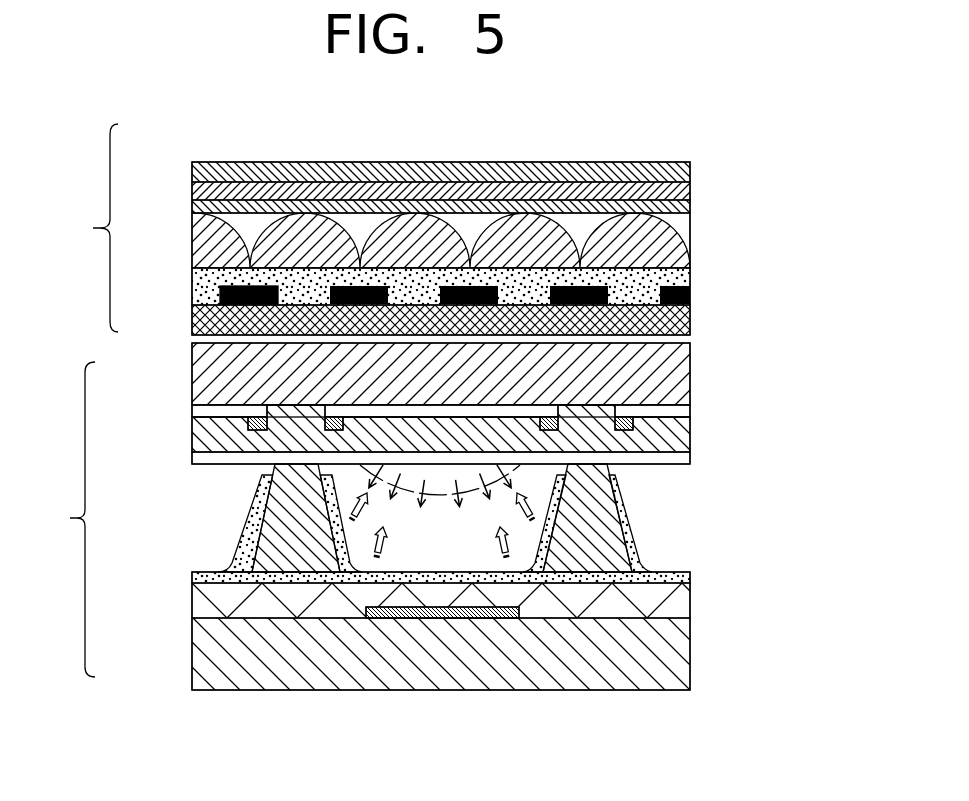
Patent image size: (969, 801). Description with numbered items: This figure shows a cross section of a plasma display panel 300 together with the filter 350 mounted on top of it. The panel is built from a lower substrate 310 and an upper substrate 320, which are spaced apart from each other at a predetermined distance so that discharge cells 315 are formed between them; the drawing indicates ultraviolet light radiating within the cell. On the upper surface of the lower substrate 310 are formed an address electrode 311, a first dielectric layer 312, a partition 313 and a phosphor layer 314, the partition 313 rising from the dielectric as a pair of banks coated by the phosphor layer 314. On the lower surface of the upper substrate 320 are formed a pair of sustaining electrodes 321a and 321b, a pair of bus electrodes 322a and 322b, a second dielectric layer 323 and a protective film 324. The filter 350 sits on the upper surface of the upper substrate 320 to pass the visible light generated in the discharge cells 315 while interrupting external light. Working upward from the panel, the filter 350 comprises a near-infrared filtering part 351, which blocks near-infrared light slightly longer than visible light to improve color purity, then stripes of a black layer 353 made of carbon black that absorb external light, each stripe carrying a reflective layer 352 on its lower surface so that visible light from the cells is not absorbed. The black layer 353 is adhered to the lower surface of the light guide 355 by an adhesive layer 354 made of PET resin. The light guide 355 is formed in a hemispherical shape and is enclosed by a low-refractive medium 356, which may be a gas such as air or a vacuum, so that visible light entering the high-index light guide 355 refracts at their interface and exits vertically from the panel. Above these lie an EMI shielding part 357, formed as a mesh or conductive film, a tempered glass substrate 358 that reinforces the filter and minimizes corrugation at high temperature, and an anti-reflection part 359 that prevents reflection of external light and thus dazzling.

The plasma display panel 300 is at (59, 519).
The lower substrate 310 is at (197, 657).
The address electrode 311 is at (412, 616).
The first dielectric layer 312 is at (192, 602).
The partition 313 is at (607, 562).
The phosphor layer 314 is at (640, 533).
The discharge cells 315 is at (442, 510).
The upper substrate 320 is at (687, 370).
The sustaining electrode 321a is at (343, 408).
The sustaining electrode 321b is at (192, 415).
The bus electrode 322a is at (325, 405).
The bus electrode 322b is at (325, 420).
The second dielectric layer 323 is at (665, 438).
The protective film 324 is at (680, 458).
The filter 350 is at (83, 228).
The near-infrared filtering part 351 is at (195, 310).
The reflective layer 352 is at (220, 295).
The black layer 353 is at (217, 277).
The adhesive layer 354 is at (670, 276).
The light guide 355 is at (682, 256).
The low-refractive medium 356 is at (600, 231).
The EMI shielding part 357 is at (192, 206).
The glass substrate 358 is at (192, 188).
The anti-reflection part 359 is at (195, 167).